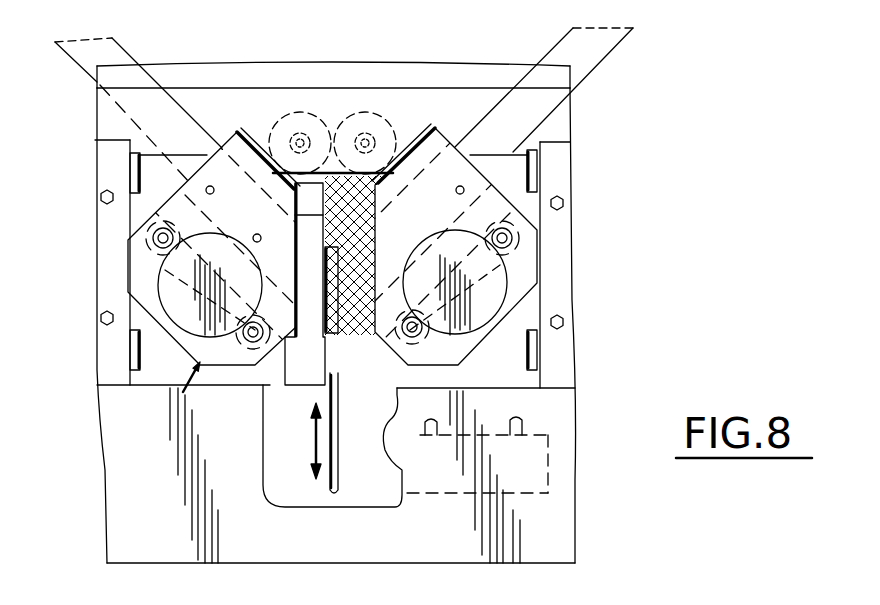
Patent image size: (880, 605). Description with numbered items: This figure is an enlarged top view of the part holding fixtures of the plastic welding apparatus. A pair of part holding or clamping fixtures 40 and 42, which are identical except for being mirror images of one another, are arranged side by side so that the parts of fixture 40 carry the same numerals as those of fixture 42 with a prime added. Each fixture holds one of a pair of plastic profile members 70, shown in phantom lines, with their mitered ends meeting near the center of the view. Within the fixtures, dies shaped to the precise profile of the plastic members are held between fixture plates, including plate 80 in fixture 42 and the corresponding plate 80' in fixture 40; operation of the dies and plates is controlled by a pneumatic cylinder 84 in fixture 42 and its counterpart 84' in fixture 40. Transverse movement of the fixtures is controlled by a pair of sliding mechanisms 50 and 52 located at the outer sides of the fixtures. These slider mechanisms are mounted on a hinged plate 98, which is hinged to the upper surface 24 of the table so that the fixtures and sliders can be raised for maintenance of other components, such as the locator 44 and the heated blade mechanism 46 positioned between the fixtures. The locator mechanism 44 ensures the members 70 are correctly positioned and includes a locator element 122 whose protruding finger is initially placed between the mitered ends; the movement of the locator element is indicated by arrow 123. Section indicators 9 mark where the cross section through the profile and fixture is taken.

The section line 9 is at (362, 188).
The upper surface 24 is at (120, 516).
The part holding fixture 40 is at (215, 268).
The part holding fixture 42 is at (497, 342).
The locator 44 is at (342, 490).
The heated blade mechanism 46 is at (328, 336).
The sliding mechanism 50 is at (117, 370).
The sliding mechanism 52 is at (553, 380).
The plastic profile member 70 is at (130, 54).
The fixture plate 80 is at (515, 279).
The fixture plate 80' is at (145, 285).
The pneumatic cylinder 84 is at (519, 282).
The pneumatic cylinder 84' is at (137, 301).
The hinged plate 98 is at (281, 90).
The locator element 122 is at (324, 494).
The arrow 123 is at (312, 440).